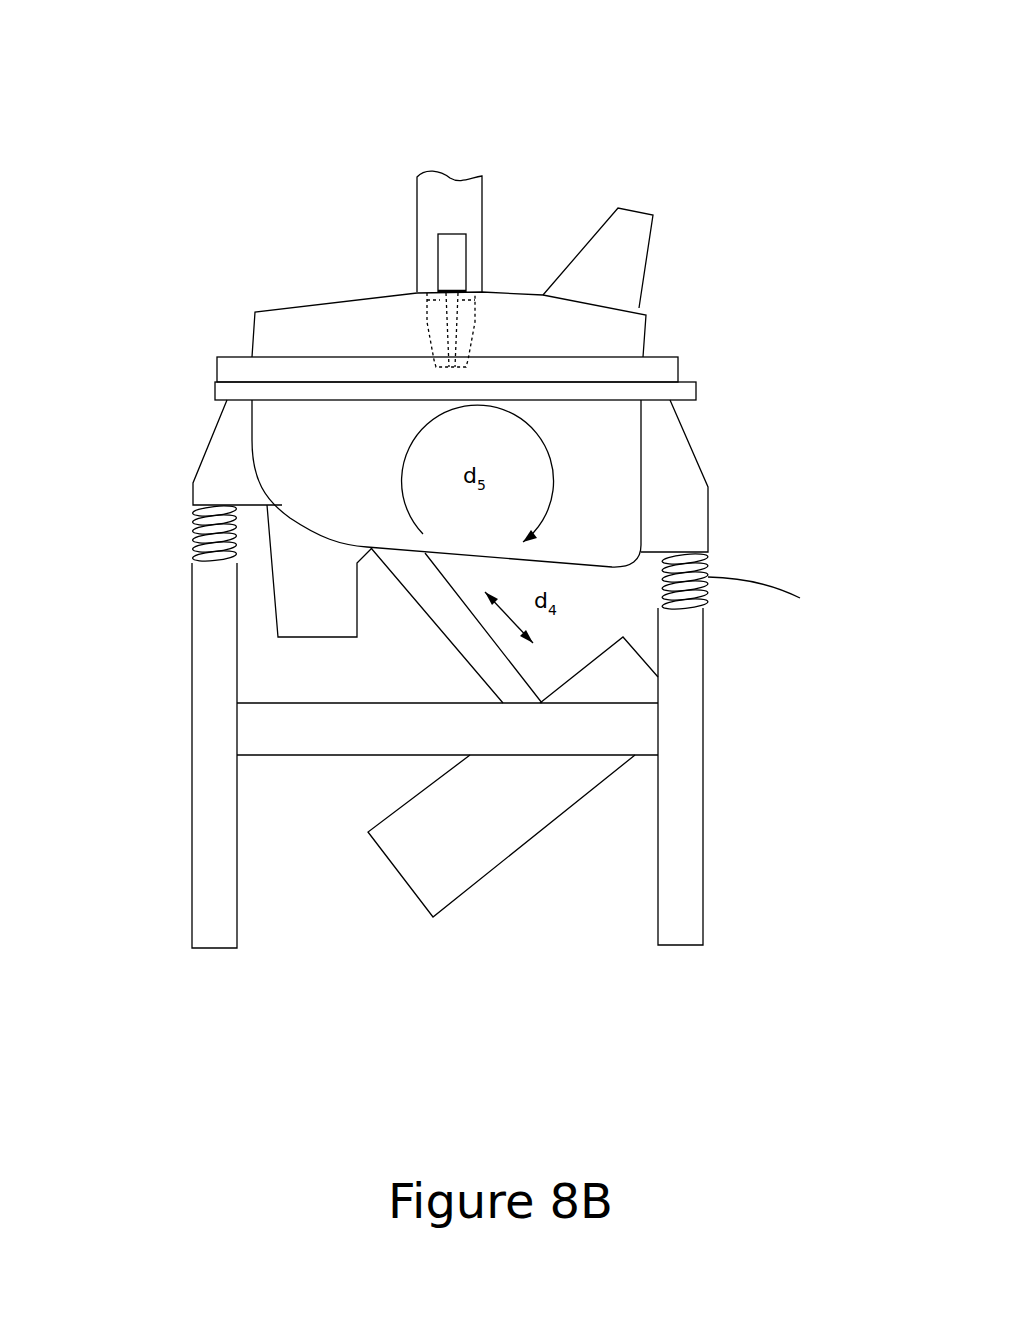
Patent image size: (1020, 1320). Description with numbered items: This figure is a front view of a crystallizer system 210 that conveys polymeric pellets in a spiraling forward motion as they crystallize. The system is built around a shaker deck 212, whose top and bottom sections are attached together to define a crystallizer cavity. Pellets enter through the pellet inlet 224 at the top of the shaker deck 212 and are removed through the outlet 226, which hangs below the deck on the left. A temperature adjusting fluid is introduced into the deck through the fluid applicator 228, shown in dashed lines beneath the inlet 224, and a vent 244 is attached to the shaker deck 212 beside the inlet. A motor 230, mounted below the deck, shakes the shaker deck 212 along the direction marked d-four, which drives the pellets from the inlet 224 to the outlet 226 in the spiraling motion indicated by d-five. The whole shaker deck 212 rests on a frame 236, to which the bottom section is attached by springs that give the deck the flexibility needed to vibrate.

The crystallizer system 210 is at (562, 100).
The shaker deck 212 is at (680, 112).
The pellet inlet 224 is at (483, 233).
The fluid applicator 228 is at (428, 337).
The vent 244 is at (648, 263).
The outlet 226 is at (297, 620).
The frame 236 is at (210, 722).
The motor 230 is at (625, 690).